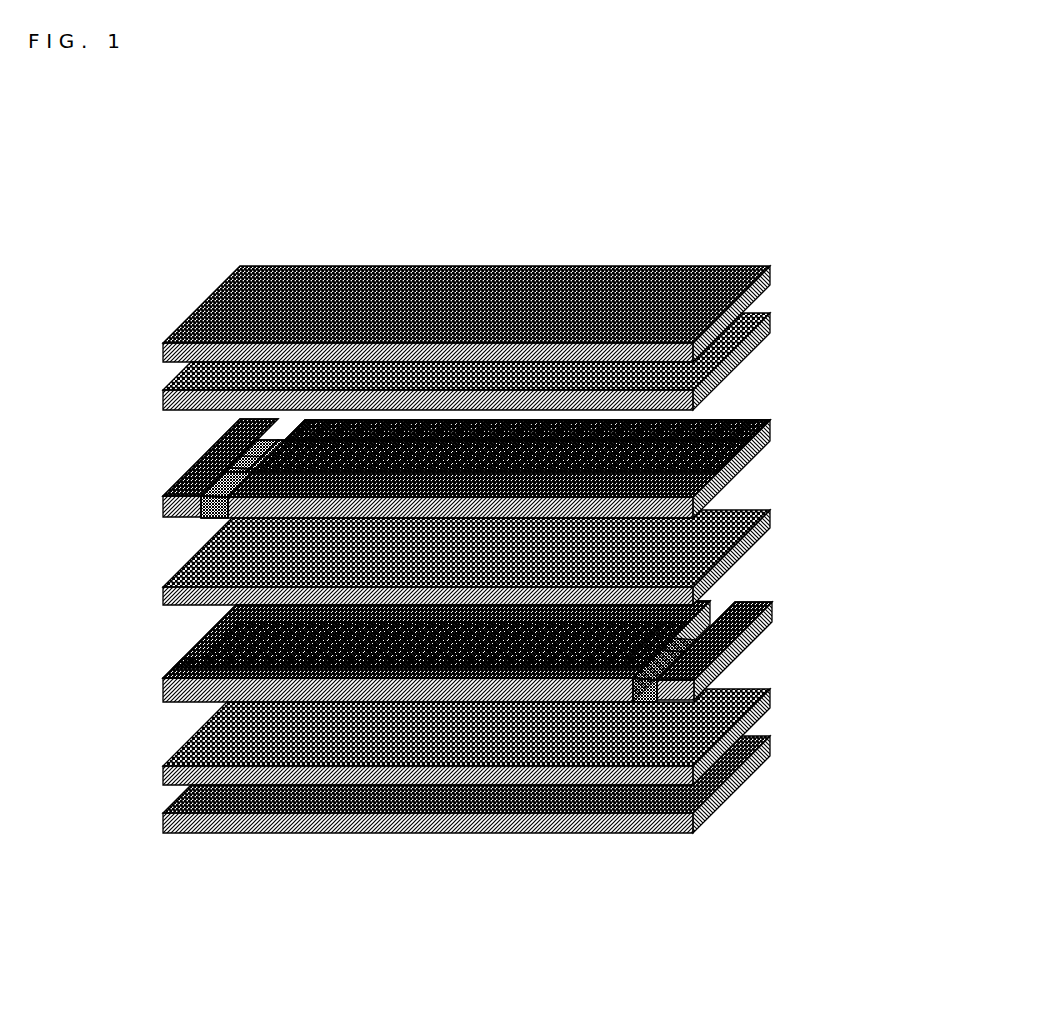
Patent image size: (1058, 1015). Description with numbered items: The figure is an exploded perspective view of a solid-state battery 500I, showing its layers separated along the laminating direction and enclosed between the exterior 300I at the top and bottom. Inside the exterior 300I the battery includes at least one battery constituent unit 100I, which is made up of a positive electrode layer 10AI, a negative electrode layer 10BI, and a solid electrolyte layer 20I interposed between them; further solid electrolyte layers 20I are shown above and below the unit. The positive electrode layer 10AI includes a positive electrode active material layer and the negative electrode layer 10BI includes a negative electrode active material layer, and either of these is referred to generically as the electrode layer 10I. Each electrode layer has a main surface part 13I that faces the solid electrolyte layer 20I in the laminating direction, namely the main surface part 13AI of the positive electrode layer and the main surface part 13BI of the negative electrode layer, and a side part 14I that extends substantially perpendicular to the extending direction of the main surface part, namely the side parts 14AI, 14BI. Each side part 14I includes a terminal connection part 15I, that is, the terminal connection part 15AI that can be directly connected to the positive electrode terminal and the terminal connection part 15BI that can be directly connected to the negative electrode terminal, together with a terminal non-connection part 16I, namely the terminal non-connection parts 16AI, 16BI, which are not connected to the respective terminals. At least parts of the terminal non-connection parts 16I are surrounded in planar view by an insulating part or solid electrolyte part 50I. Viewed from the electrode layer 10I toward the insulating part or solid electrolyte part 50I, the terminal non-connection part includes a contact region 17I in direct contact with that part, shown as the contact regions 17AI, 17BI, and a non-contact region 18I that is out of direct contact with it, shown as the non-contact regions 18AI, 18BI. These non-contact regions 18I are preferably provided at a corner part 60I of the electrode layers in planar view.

The solid-state battery 500I is at (818, 210).
The exterior 300I is at (727, 288).
The solid electrolyte layer 20I is at (727, 347).
The battery constituent unit 100I is at (842, 382).
The electrode layer 10I is at (462, 567).
The positive electrode layer 10AI is at (717, 440).
The negative electrode layer 10BI is at (655, 638).
The terminal connection part 15I is at (437, 549).
The terminal connection part 15AI is at (740, 468).
The terminal connection part 15BI is at (233, 637).
The main surface part 13I is at (419, 567).
The main surface part 13AI is at (220, 438).
The main surface part 13BI is at (225, 645).
The side part 14I is at (392, 701).
The side part 14AI is at (205, 500).
The side part 14BI is at (647, 683).
The terminal non-connection part 16I is at (447, 690).
The terminal non-connection part 16AI is at (213, 514).
The terminal non-connection part 16BI is at (660, 665).
The contact region 17I is at (475, 566).
The contact region 17AI is at (432, 440).
The contact region 17BI is at (388, 657).
The non-contact region 18I is at (455, 556).
The non-contact region 18AI is at (280, 437).
The non-contact region 18BI is at (637, 677).
The insulating part or solid electrolyte part 50I is at (548, 420).
The corner part 60I is at (185, 466).